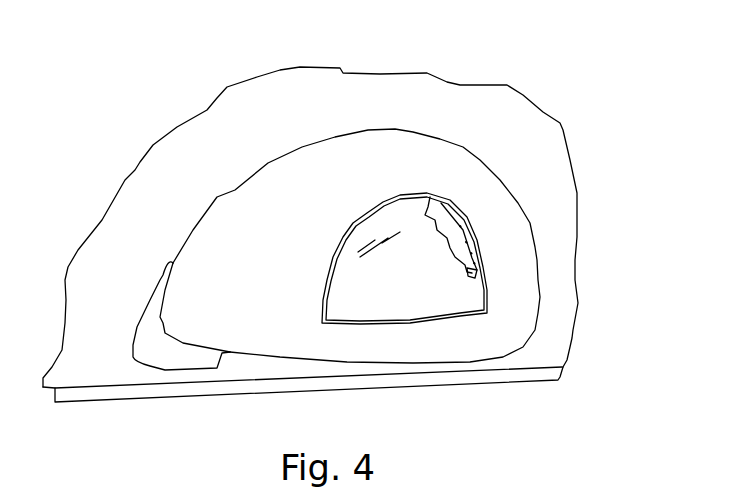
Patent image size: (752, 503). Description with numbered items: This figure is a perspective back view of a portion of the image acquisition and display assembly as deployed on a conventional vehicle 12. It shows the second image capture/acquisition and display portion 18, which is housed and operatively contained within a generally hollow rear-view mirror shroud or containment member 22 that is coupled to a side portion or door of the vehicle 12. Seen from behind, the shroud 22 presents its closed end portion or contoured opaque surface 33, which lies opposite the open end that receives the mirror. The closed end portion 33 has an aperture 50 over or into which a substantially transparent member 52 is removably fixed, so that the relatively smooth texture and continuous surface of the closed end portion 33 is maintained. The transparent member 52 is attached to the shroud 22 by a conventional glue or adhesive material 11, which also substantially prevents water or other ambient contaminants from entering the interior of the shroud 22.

The second image capture/acquisition and display portion 18 is at (271, 137).
The vehicle 12 is at (103, 380).
The shroud or containment member 22 is at (481, 160).
The closed end portion or contoured opaque surface 33 is at (281, 271).
The aperture 50 is at (401, 195).
The substantially transparent member 52 is at (431, 291).
The adhesive material 11 is at (478, 257).